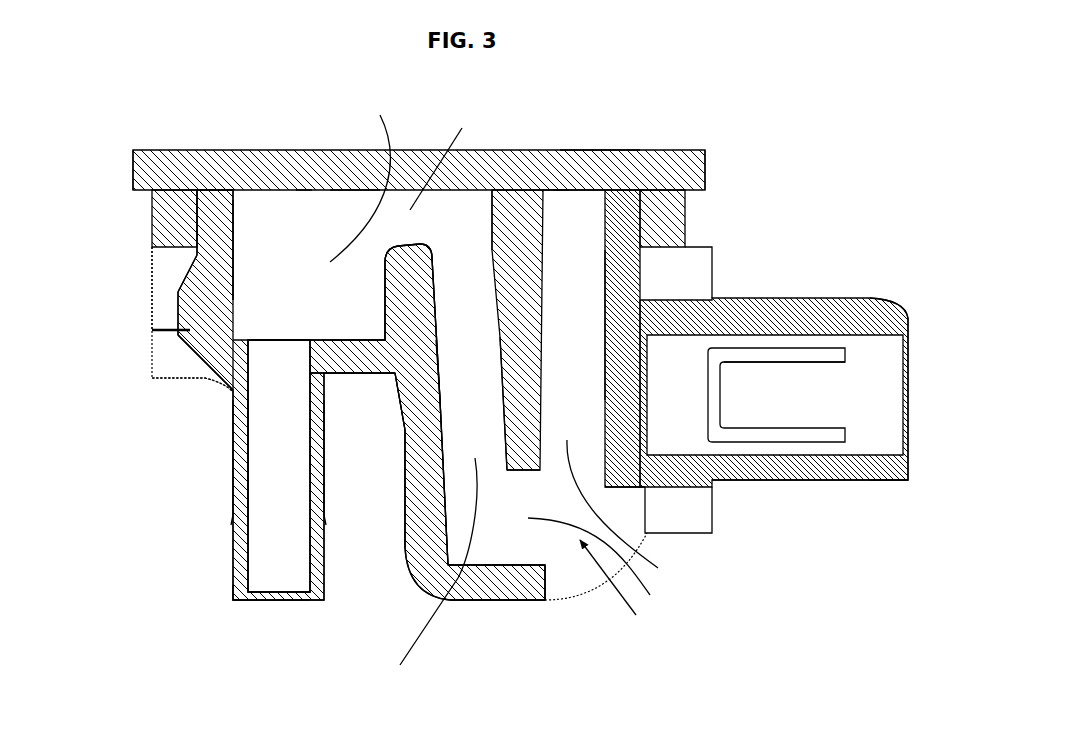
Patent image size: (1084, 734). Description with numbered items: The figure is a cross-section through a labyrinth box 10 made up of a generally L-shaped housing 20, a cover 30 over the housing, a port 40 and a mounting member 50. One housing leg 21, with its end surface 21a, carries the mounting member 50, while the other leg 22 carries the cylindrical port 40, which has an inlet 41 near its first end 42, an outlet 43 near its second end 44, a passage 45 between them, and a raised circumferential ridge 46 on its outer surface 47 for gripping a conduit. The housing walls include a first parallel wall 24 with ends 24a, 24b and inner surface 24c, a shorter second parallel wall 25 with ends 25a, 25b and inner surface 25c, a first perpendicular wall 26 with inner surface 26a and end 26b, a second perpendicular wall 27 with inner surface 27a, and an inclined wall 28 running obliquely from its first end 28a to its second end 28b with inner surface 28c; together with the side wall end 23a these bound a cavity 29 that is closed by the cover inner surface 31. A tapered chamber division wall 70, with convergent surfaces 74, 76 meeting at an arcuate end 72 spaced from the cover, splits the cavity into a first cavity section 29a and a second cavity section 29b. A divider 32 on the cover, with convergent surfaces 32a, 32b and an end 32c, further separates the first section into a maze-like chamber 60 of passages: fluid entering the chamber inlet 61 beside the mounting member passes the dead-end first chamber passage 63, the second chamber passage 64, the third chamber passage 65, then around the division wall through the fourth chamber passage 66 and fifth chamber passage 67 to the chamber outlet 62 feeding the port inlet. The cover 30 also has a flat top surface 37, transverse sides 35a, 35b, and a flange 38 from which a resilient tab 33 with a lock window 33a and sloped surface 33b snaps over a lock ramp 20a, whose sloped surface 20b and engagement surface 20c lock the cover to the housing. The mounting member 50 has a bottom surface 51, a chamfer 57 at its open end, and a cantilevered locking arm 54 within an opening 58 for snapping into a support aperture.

The labyrinth box 10 is at (790, 118).
The housing 20 is at (428, 585).
The lock ramp 20a is at (182, 303).
The sloped surface 20b is at (185, 285).
The engagement surface 20c is at (192, 352).
The one housing leg 21 is at (404, 440).
The one housing leg end surface 21a is at (470, 600).
The other housing leg 22 is at (347, 372).
The side wall end 23a is at (362, 178).
The first parallel wall 24 is at (620, 278).
The first parallel wall end 24a is at (614, 200).
The first parallel wall other end 24b is at (620, 488).
The first parallel wall inner surface 24c is at (605, 320).
The second parallel wall 25 is at (218, 230).
The second parallel wall end 25a is at (218, 190).
The second parallel wall other end 25b is at (218, 350).
The second parallel wall inner surface 25c is at (233, 253).
The first perpendicular wall 26 is at (487, 600).
The first perpendicular wall inner surface 26a is at (505, 585).
The first perpendicular wall end 26b is at (545, 572).
The second perpendicular wall 27 is at (330, 368).
The second perpendicular wall inner surface 27a is at (350, 358).
The inclined wall 28 is at (427, 475).
The inclined wall first end 28a is at (433, 572).
The inclined wall second end 28b is at (420, 357).
The inclined wall inner surface 28c is at (447, 448).
The cavity 29 is at (488, 517).
The first cavity section 29a is at (540, 569).
The second cavity section 29b is at (375, 174).
The cover 30 is at (162, 148).
The cover inner surface 31 is at (311, 197).
The divider 32 is at (520, 269).
The first convergent surface 32a is at (537, 358).
The second convergent surface 32b is at (492, 227).
The divider end 32c is at (150, 328).
The resilient tab 33 is at (162, 366).
The lock window 33a is at (162, 260).
The sloped surface 33b is at (205, 380).
The transverse side 35a is at (705, 165).
The rear transverse side 35b is at (133, 167).
The flat top surface 37 is at (603, 165).
The flange 38 is at (158, 219).
The port 40 is at (228, 558).
The port inlet 41 is at (268, 345).
The port first end 42 is at (230, 378).
The port outlet 43 is at (280, 600).
The port second end 44 is at (234, 598).
The passage 45 is at (272, 468).
The raised circumferential ridge 46 is at (230, 530).
The port outer surface 47 is at (233, 443).
The mounting member 50 is at (848, 296).
The mounting member bottom surface 51 is at (786, 482).
The locking arm 54 is at (800, 395).
The chamfer 57 is at (885, 310).
The opening 58 is at (787, 345).
The maze-like chamber 60 is at (540, 392).
The chamber inlet 61 is at (616, 588).
The chamber outlet 62 is at (290, 336).
The first chamber passage 63 is at (669, 510).
The second chamber passage 64 is at (646, 564).
The third chamber passage 65 is at (392, 578).
The fourth chamber passage 66 is at (459, 154).
The fifth chamber passage 67 is at (375, 174).
The chamber division wall 70 is at (408, 296).
The chamber wall end 72 is at (416, 248).
The first convergent surface 74 is at (434, 336).
The second convergent surface 76 is at (388, 278).